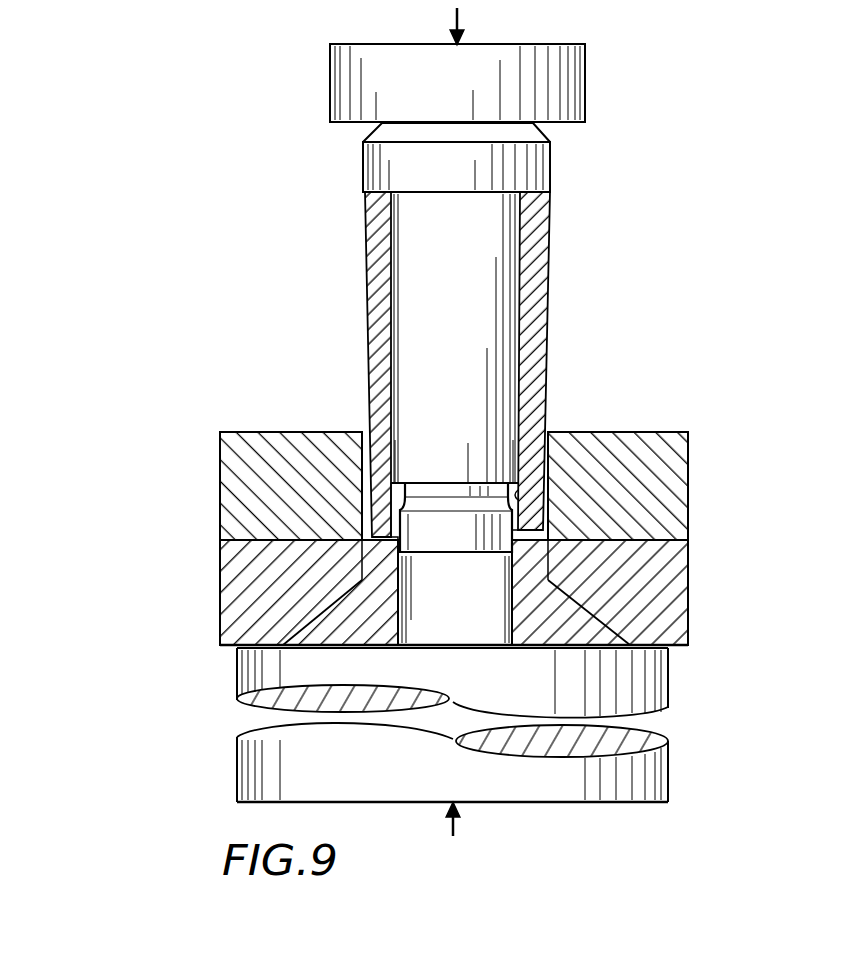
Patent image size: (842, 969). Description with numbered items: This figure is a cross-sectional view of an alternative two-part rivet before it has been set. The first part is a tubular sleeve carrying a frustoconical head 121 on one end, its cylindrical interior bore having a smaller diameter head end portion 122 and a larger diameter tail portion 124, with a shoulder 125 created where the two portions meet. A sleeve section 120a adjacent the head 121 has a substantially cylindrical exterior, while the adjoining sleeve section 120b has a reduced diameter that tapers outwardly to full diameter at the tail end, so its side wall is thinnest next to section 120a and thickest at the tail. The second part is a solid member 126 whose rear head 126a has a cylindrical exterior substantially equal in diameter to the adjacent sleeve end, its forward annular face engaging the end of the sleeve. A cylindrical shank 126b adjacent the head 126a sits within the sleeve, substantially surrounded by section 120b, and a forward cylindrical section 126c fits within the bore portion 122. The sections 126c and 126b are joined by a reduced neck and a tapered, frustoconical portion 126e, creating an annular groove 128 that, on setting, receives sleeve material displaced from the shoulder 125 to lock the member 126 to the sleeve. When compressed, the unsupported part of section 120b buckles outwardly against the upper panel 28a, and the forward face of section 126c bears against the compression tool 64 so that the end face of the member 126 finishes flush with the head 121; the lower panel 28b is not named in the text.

The solid member 126 is at (472, 312).
The rear head 126a is at (537, 168).
The cylindrical shank 126b is at (503, 336).
The forward section 126c is at (413, 528).
The tapered frustoconical portion 126e is at (396, 486).
The sleeve section adjacent the head 120a is at (403, 494).
The tapered sleeve section 120b is at (366, 248).
The annular groove 128 is at (398, 503).
The upper panel 28a is at (676, 454).
The lower die half 28b is at (686, 646).
The smaller diameter head end portion 122 is at (500, 600).
The head 121 is at (598, 626).
The larger diameter tail portion 124 is at (520, 509).
The shoulder 125 is at (516, 537).
The tool 64 is at (662, 772).